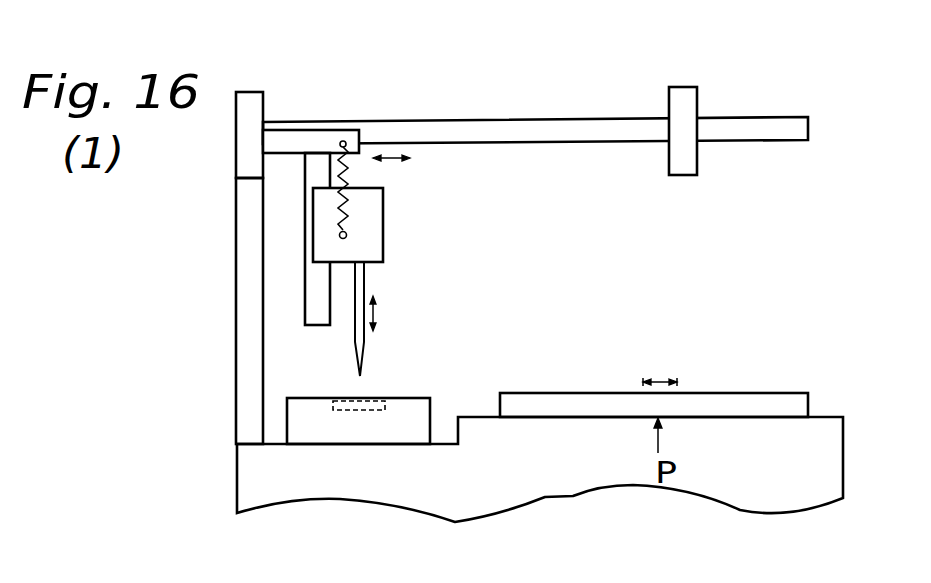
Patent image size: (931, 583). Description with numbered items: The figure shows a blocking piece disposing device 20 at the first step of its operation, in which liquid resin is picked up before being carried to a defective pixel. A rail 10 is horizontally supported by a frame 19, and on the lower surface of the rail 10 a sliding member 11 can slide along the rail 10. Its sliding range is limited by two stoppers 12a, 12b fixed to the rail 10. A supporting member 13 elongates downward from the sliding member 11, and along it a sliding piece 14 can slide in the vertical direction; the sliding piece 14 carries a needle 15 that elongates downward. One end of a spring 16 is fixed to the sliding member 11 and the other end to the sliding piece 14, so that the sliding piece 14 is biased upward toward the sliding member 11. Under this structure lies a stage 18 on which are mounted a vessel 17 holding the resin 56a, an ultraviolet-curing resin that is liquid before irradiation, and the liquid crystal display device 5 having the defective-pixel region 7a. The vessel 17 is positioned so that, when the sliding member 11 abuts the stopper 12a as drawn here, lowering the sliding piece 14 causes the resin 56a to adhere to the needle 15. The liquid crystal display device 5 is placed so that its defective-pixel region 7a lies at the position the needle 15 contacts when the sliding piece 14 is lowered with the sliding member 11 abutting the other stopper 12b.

The liquid crystal display device 5 is at (803, 403).
The defective-pixel region 7a is at (658, 378).
The rail 10 is at (520, 138).
The sliding member 11 is at (305, 143).
The stopper 12a is at (248, 112).
The stopper 12b is at (688, 95).
The supporting member 13 is at (322, 273).
The sliding piece 14 is at (373, 233).
The needle 15 is at (355, 352).
The spring 16 is at (348, 165).
The vessel 17 is at (300, 427).
The stage 18 is at (335, 493).
The frame 19 is at (248, 362).
The blocking piece disposing device 20 is at (637, 92).
The resin 56a is at (365, 402).